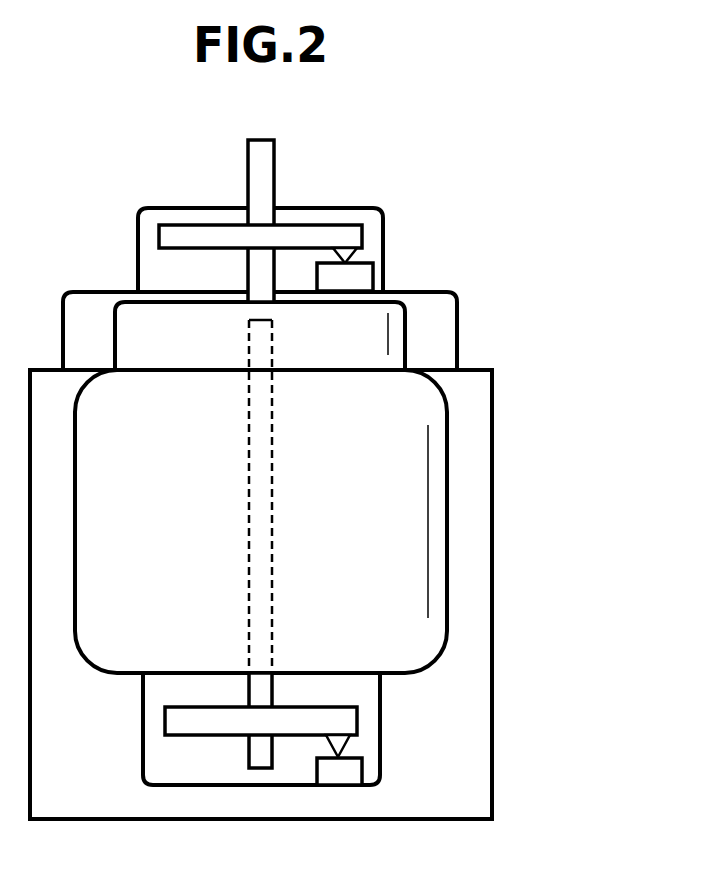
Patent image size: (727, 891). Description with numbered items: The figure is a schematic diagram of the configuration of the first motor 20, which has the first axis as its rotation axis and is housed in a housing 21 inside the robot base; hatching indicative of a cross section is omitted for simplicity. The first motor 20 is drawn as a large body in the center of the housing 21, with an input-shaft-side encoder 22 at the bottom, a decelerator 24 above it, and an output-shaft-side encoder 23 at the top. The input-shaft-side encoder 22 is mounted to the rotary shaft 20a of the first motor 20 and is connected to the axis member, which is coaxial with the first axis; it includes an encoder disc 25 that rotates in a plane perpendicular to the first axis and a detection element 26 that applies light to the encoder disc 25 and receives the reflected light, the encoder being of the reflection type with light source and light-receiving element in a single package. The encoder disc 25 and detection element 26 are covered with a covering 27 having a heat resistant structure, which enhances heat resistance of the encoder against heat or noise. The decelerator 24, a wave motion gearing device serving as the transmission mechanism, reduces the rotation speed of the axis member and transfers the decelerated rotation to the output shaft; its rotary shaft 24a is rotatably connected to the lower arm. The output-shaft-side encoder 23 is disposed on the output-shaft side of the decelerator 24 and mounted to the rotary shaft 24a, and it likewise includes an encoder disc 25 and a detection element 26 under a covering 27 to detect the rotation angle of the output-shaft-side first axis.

The first motor 20 is at (445, 508).
The rotary shaft 20a is at (247, 757).
The housing 21 is at (492, 605).
The input-shaft-side encoder 22 is at (338, 796).
The output-shaft-side encoder 23 is at (388, 178).
The decelerator 24 is at (405, 333).
The rotary shaft 24a is at (276, 158).
The encoder disc 25 is at (362, 232).
The detection element 26 is at (373, 273).
The covering 27 is at (138, 246).